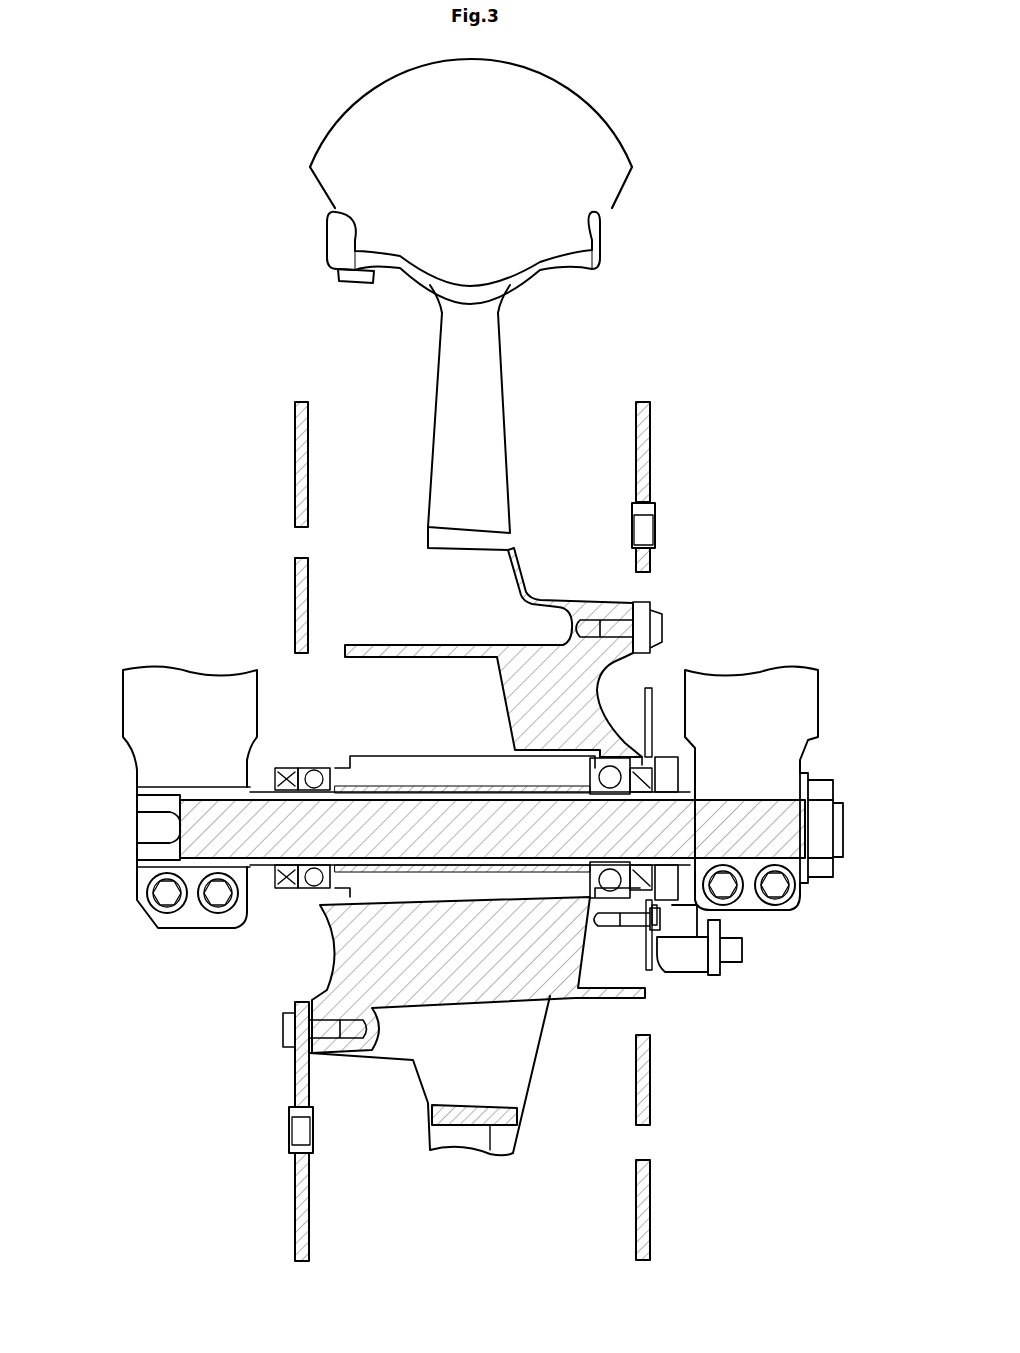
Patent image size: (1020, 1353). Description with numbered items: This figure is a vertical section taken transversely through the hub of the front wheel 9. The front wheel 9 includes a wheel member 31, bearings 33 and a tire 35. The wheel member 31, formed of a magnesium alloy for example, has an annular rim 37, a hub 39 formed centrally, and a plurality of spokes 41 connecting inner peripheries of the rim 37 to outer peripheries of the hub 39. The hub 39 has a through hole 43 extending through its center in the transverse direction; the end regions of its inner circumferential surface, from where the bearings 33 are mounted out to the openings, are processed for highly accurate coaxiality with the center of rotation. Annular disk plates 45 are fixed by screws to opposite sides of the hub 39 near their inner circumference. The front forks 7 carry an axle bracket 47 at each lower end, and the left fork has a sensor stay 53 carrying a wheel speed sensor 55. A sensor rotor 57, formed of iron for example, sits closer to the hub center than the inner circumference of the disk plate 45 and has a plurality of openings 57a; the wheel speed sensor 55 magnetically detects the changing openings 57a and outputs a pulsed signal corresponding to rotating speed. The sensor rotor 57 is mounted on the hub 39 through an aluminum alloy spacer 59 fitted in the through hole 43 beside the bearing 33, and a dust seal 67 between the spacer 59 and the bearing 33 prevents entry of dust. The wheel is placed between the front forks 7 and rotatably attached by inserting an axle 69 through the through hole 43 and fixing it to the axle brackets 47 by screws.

The front forks 7 is at (140, 693).
The front wheel 9 is at (670, 90).
The wheel member 31 is at (618, 246).
The bearings 33 is at (318, 770).
The tire 35 is at (348, 138).
The rim 37 is at (330, 252).
The hub 39 is at (652, 668).
The spokes 41 is at (502, 417).
The through hole 43 is at (426, 772).
The disk plates 45 is at (292, 450).
The axle bracket 47 is at (148, 918).
The sensor stay 53 is at (722, 934).
The wheel speed sensor 55 is at (692, 958).
The sensor rotor 57 is at (650, 976).
The openings 57a is at (645, 714).
The spacer 59 is at (662, 753).
The dust seal 67 is at (290, 765).
The axle 69 is at (505, 840).